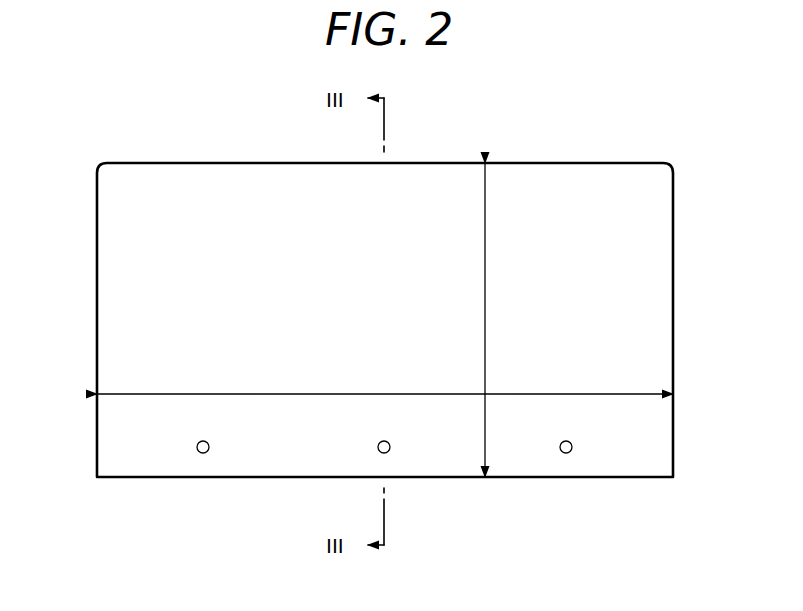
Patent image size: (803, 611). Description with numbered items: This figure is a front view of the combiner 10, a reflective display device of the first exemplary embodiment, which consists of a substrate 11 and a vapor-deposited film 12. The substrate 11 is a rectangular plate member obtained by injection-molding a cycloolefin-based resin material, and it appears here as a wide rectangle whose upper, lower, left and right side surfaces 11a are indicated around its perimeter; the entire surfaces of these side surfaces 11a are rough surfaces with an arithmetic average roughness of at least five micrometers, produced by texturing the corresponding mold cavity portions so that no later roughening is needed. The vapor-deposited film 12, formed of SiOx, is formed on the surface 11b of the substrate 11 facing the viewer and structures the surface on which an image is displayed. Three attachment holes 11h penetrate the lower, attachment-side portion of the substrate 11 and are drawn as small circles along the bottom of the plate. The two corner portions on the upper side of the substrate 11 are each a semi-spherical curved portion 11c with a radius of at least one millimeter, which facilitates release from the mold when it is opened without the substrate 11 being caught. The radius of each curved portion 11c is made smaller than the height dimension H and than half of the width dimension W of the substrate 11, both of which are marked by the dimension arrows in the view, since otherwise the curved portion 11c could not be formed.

The combiner 10 is at (698, 141).
The substrate 11 is at (648, 348).
The side surfaces 11a is at (573, 163).
The surface 11b is at (195, 213).
The curved portion 11c is at (107, 170).
The attachment holes 11h is at (200, 454).
The vapor-deposited film 12 is at (611, 382).
The height dimension H is at (486, 232).
The width dimension W is at (312, 393).